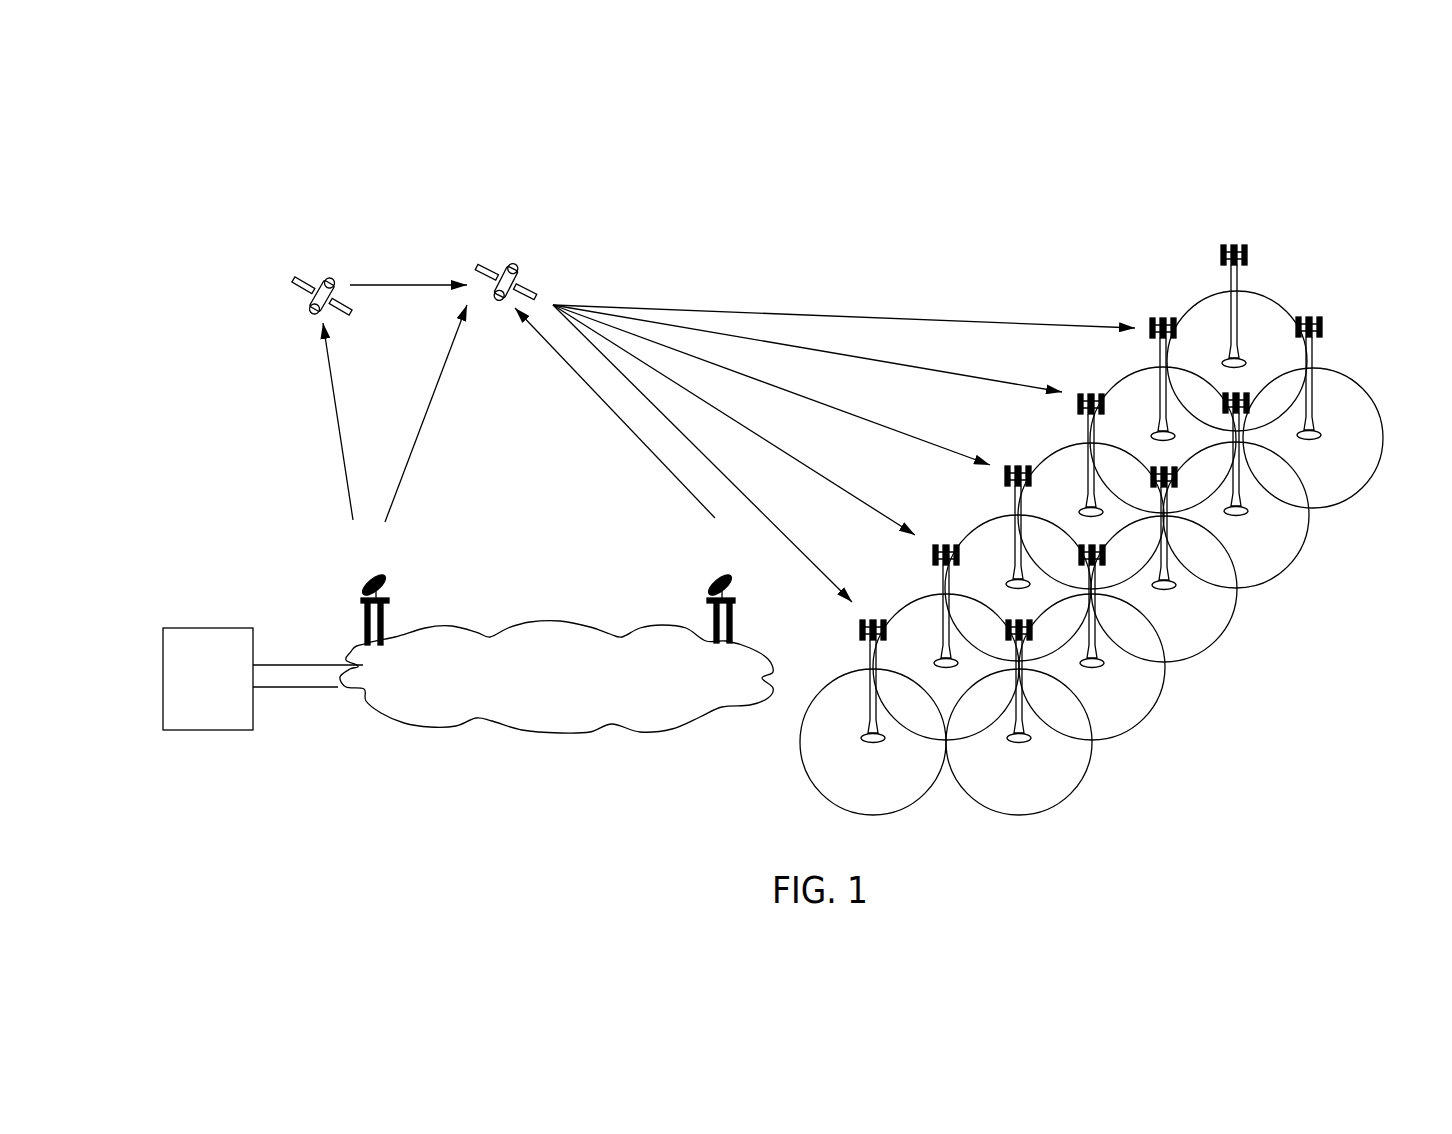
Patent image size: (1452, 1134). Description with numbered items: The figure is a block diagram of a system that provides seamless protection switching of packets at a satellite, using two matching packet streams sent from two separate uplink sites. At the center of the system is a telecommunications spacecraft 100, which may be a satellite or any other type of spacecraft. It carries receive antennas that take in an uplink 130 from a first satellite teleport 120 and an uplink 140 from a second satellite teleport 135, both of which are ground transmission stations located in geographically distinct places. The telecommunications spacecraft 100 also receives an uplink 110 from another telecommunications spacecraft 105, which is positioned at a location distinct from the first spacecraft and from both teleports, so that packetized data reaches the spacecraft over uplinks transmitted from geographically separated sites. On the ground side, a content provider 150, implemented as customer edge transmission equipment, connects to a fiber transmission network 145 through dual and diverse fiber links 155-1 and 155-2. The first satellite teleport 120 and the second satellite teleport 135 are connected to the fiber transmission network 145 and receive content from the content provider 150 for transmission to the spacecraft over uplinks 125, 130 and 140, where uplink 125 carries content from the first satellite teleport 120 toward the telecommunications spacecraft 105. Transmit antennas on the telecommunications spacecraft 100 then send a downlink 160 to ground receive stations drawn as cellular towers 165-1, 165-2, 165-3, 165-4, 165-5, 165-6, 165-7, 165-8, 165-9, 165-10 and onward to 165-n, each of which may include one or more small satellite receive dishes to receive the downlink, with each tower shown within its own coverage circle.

The telecommunications spacecraft 100 is at (547, 212).
The telecommunications spacecraft 105 is at (259, 212).
The uplink 110 is at (406, 283).
The first satellite teleport 120 is at (362, 585).
The uplink 125 is at (336, 415).
The uplink 130 is at (451, 354).
The second satellite teleport 135 is at (737, 588).
The uplink 140 is at (607, 406).
The fiber transmission network 145 is at (577, 731).
The content provider 150 is at (212, 731).
The fiber link 155-1 is at (284, 690).
The fiber link 155-2 is at (296, 663).
The downlink 160 is at (930, 318).
The cellular tower 165-1 is at (875, 745).
The cellular tower 165-2 is at (949, 670).
The cellular tower 165-3 is at (1025, 745).
The cellular tower 165-4 is at (1094, 668).
The cellular tower 165-5 is at (1024, 592).
The cellular tower 165-6 is at (1097, 518).
The cellular tower 165-7 is at (1190, 585).
The cellular tower 165-8 is at (1172, 443).
The cellular tower 165-9 is at (1250, 508).
The cellular tower 165-10 is at (1240, 362).
The cellular tower 165-n is at (1316, 436).